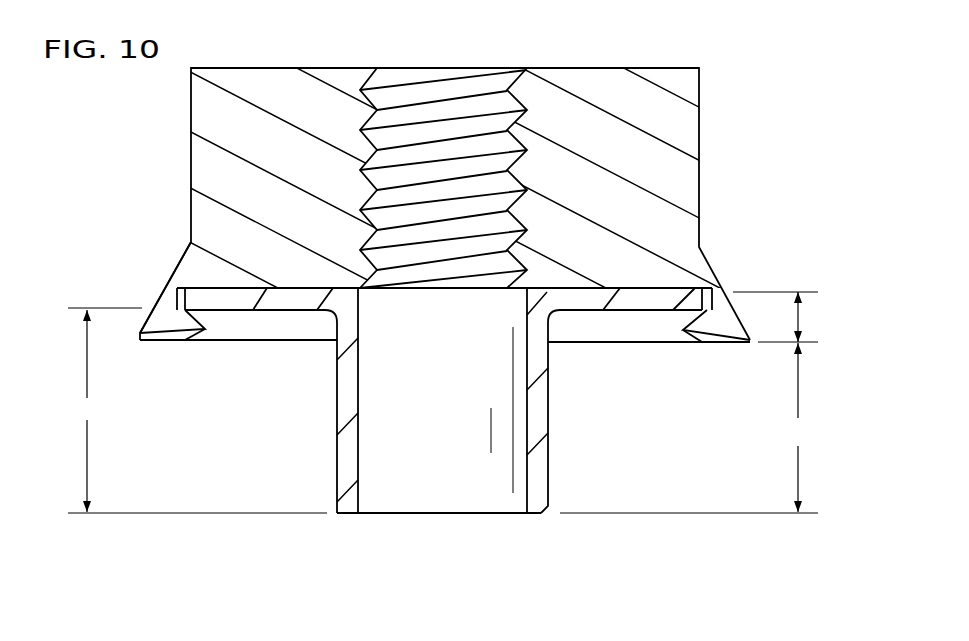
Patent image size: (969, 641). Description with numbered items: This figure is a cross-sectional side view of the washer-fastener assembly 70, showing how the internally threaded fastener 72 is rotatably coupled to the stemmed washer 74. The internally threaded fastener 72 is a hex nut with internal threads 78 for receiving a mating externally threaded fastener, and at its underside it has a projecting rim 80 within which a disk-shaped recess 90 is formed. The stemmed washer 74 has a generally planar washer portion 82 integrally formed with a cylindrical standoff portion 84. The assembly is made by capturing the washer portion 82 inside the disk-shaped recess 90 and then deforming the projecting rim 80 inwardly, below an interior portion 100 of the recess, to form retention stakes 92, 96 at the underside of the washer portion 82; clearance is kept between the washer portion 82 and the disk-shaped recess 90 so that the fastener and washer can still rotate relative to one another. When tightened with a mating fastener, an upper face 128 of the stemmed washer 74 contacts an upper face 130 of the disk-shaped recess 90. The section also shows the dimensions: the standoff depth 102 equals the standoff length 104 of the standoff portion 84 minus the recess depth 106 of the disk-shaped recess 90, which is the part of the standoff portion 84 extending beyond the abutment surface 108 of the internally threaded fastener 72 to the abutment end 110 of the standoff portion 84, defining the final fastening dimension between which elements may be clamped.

The washer-fastener assembly 70 is at (784, 171).
The internally threaded fastener 72 is at (705, 97).
The stemmed washer 74 is at (572, 404).
The internal threads 78 is at (378, 97).
The projecting rim 80 is at (160, 300).
The washer portion 82 is at (596, 312).
The standoff portion 84 is at (548, 462).
The disk-shaped recess 90 is at (702, 290).
The retention stake 92 is at (202, 340).
The retention stake 96 is at (683, 330).
The interior portion 100 is at (170, 296).
The standoff depth 102 is at (689, 428).
The standoff length 104 is at (197, 410).
The recess depth 106 is at (806, 325).
The abutment surface 108 is at (157, 342).
The abutment end 110 is at (540, 513).
The upper face 128 is at (231, 288).
The upper face 130 is at (176, 287).